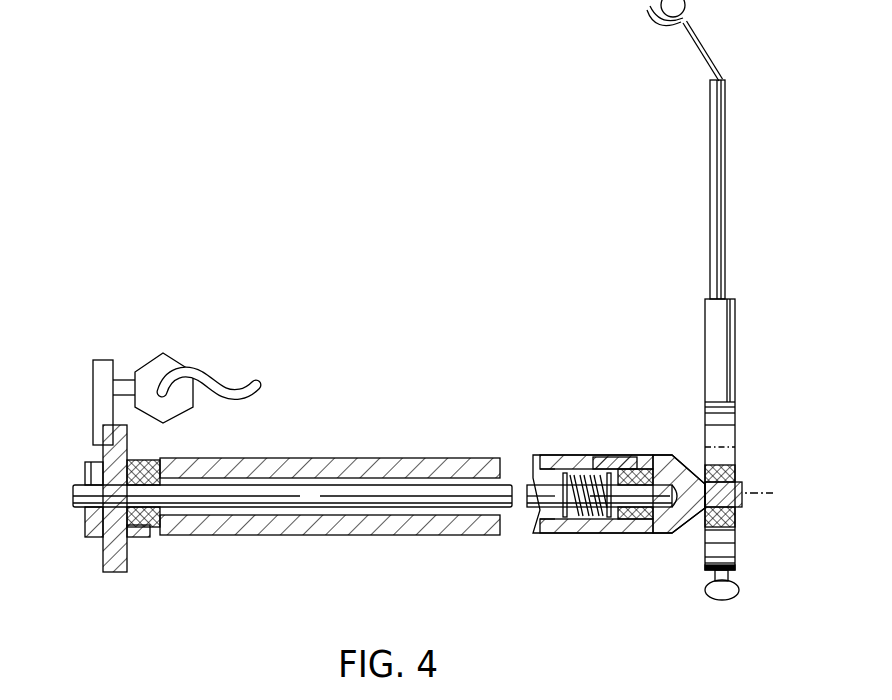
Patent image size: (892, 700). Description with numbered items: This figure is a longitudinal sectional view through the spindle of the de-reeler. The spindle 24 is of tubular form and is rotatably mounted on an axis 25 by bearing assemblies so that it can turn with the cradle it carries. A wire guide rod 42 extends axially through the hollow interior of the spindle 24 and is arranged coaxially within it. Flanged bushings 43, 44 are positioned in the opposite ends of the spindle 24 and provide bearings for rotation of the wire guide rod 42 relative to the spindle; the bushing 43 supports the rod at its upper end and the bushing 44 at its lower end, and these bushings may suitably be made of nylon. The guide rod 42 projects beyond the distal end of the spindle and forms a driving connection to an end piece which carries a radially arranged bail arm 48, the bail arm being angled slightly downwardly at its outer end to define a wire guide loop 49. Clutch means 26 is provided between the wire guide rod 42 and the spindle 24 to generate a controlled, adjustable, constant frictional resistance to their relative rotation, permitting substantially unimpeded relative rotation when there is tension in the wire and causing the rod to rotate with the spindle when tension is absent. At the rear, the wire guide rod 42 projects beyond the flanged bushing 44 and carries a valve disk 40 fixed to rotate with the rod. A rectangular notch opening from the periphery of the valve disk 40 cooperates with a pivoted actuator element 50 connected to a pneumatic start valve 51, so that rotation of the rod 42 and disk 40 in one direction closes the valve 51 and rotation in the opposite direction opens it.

The spindle 24 is at (349, 537).
The axis 25 is at (761, 493).
The clutch means 26 is at (595, 456).
The valve disk 40 is at (113, 573).
The wire guide rod 42 is at (72, 506).
The flanged bushing 43 is at (640, 455).
The flanged bushing 44 is at (131, 540).
The bail arm 48 is at (703, 328).
The wire guide loop 49 is at (698, 53).
The pivoted actuator element 50 is at (93, 388).
The pneumatic start valve 51 is at (153, 355).